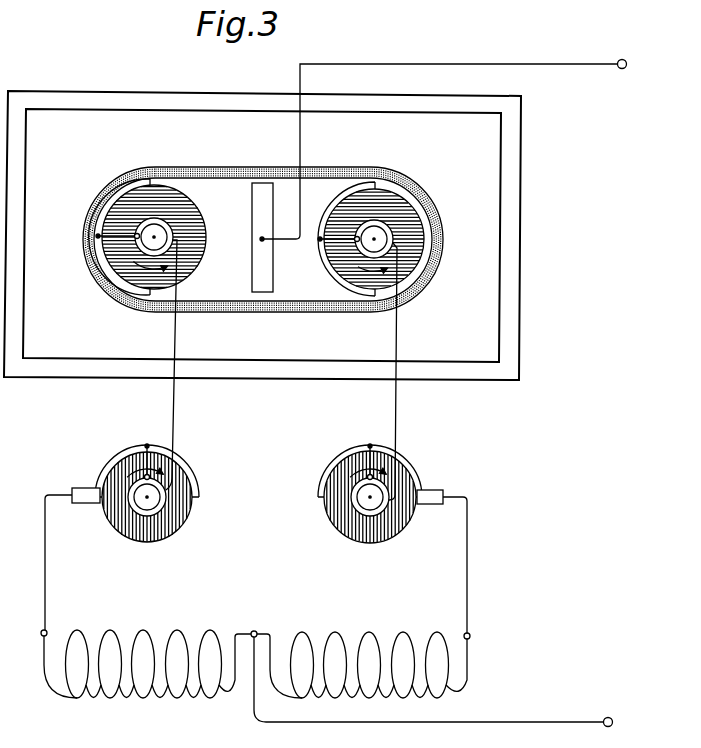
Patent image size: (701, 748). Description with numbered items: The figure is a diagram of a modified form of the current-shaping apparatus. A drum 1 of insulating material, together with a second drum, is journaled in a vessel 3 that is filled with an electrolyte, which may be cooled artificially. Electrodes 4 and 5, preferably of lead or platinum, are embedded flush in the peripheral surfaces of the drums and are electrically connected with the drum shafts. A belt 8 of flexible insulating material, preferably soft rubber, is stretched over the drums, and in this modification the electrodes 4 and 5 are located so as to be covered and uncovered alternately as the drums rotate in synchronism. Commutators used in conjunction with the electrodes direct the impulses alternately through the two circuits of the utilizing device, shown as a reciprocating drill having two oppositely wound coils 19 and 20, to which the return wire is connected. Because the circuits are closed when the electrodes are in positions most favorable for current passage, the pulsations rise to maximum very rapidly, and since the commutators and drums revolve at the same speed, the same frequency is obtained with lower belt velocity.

The drum 1 is at (198, 214).
The vessel 3 is at (508, 249).
The electrode 4 is at (371, 239).
The electrode 5 is at (118, 222).
The belt 8 is at (362, 168).
The coil 19 is at (363, 651).
The coil 20 is at (149, 646).